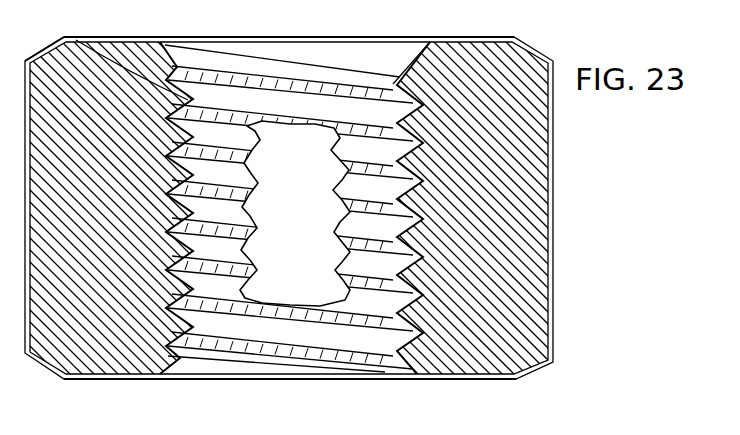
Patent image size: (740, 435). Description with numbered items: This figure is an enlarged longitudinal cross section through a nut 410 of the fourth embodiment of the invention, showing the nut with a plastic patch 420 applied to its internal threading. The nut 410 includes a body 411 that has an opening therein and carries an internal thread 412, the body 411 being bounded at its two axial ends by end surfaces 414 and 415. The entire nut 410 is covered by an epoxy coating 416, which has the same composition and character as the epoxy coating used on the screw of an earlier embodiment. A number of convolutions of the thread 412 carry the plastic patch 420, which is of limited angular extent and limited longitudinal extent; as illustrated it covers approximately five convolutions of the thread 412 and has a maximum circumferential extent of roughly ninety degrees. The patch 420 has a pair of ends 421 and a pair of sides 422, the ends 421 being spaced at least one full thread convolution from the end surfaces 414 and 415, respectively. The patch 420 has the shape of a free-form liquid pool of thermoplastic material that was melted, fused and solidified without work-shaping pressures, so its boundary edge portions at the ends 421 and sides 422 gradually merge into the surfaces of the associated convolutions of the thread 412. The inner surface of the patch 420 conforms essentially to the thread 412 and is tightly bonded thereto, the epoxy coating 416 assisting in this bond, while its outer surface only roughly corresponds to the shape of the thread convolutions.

The nut 410 is at (489, 27).
The body 411 is at (527, 162).
The internal thread 412 is at (72, 37).
The end surface 414 is at (133, 37).
The end surface 415 is at (477, 388).
The epoxy coating 416 is at (393, 308).
The plastic patch 420 is at (321, 305).
The ends 421 is at (288, 121).
The sides 422 is at (368, 133).